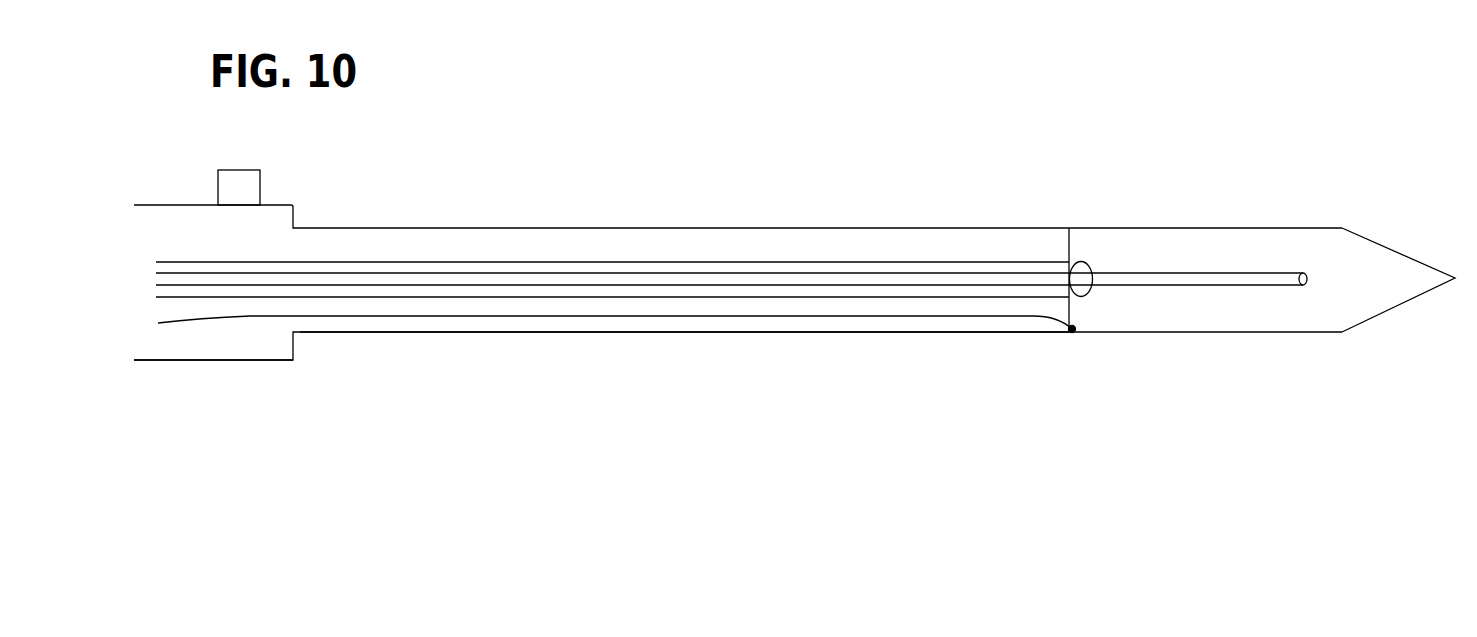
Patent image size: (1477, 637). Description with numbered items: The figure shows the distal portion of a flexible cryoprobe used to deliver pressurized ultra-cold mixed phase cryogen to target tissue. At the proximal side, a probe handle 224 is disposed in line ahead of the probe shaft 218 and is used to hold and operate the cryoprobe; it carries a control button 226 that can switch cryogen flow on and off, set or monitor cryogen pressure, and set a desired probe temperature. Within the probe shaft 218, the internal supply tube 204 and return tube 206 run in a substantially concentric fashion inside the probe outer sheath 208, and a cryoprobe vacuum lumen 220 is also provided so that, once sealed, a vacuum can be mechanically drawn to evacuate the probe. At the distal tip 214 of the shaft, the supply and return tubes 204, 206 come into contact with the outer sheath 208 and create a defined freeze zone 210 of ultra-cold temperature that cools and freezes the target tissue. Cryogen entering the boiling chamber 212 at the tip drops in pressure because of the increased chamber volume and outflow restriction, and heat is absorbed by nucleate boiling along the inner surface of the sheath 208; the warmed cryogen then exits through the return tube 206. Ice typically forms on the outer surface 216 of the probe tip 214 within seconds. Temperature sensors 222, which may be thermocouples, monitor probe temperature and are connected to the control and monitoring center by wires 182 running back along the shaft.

The wires 182 is at (252, 316).
The supply tube 204 is at (1155, 275).
The return tube 206 is at (1053, 262).
The probe outer sheath 208 is at (893, 228).
The freeze zone 210 is at (1455, 357).
The boiling chamber 212 is at (1370, 283).
The distal tip 214 is at (1366, 202).
The outer surface of the probe tip 216 is at (1373, 240).
The probe shaft 218 is at (527, 332).
The cryoprobe vacuum lumen 220 is at (537, 247).
The temperature sensors 222 is at (1072, 329).
The probe handle 224 is at (162, 360).
The control button 226 is at (244, 187).